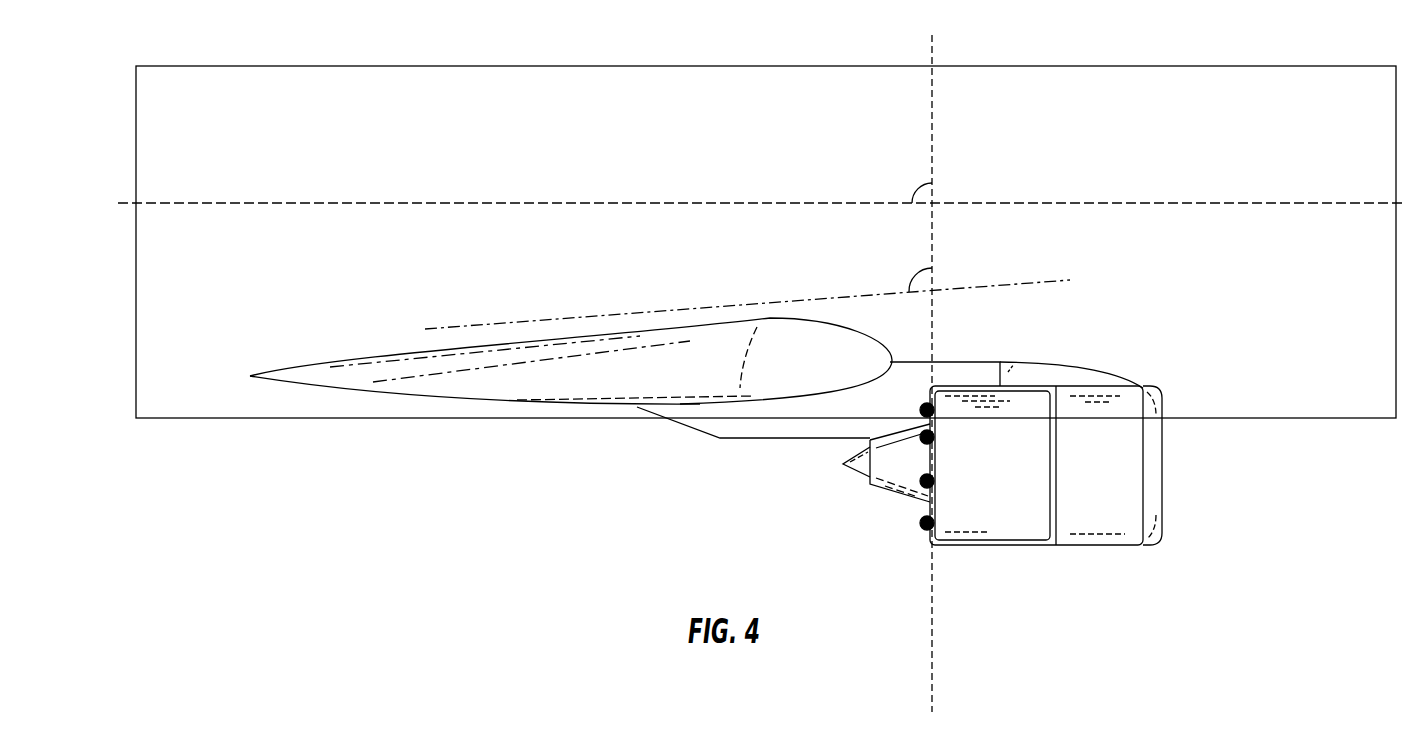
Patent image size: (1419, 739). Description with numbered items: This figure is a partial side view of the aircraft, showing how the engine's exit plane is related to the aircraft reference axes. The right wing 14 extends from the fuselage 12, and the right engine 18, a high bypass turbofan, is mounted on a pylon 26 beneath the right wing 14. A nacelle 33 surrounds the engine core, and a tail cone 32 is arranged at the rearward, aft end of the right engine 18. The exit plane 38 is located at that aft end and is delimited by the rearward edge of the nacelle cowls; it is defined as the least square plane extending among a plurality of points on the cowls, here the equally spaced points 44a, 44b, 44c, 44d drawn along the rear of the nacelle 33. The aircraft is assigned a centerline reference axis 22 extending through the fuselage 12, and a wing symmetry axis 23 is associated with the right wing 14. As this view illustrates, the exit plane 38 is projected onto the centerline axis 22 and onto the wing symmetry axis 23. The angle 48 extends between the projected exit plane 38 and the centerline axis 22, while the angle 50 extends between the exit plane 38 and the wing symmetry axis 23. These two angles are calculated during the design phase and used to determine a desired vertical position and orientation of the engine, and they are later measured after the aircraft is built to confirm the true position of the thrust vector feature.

The fuselage 12 is at (1230, 177).
The right wing 14 is at (407, 394).
The right engine 18 is at (1093, 547).
The centerline reference axis 22 is at (458, 203).
The wing symmetry axis 23 is at (462, 327).
The pylon 26 is at (892, 414).
The tail cone 32 is at (892, 487).
The nacelle 33 is at (1122, 488).
The exit plane 38 is at (932, 108).
The point 44a is at (934, 410).
The point 44b is at (934, 437).
The point 44c is at (932, 482).
The point 44d is at (932, 527).
The angle 48 is at (914, 188).
The angle 50 is at (916, 276).